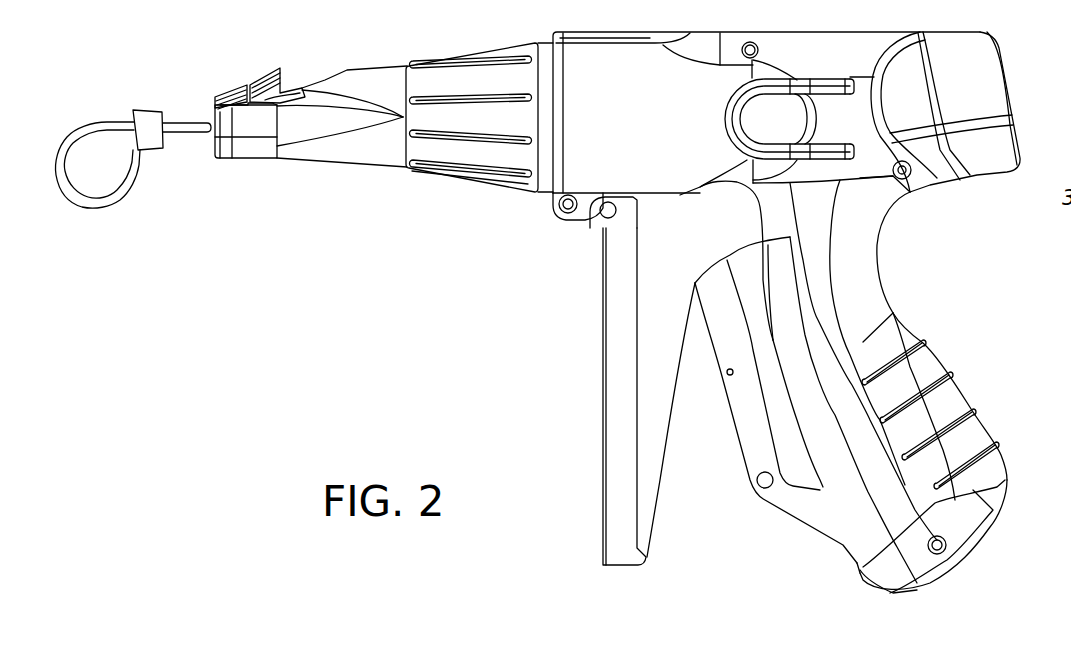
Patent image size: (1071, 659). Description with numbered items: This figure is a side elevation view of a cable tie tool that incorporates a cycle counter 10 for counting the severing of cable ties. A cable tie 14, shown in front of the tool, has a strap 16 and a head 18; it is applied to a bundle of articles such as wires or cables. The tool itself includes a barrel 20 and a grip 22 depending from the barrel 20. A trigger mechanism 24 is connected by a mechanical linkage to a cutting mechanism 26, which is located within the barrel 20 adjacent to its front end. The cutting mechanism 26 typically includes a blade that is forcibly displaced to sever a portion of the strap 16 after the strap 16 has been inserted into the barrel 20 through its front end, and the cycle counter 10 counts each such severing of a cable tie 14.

The cycle counter 10 is at (1018, 69).
The cable tie 14 is at (113, 110).
The strap 16 is at (183, 133).
The head 18 is at (144, 110).
The barrel 20 is at (848, 32).
The grip 22 is at (936, 357).
The trigger mechanism 24 is at (599, 413).
The cutting mechanism 26 is at (248, 164).